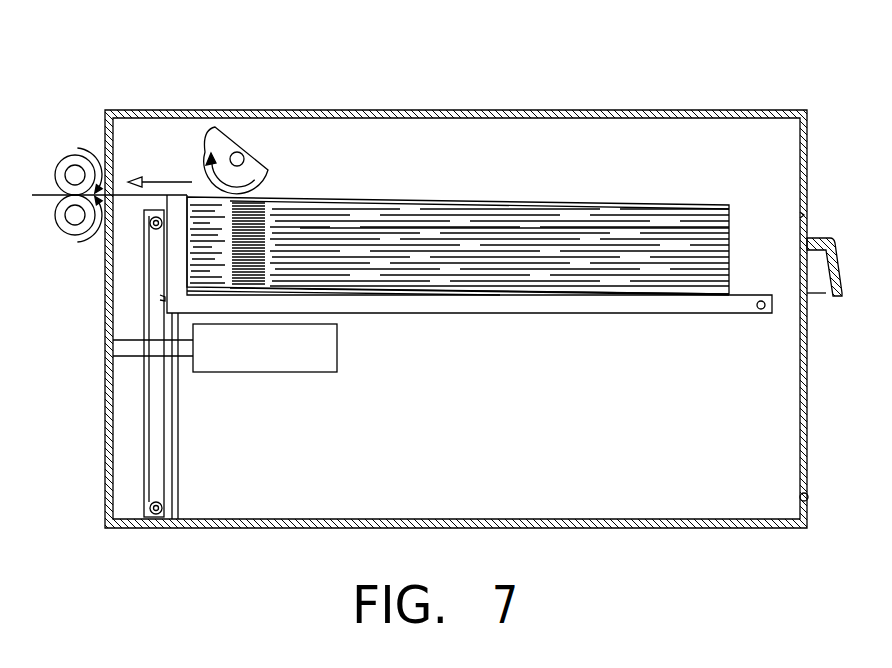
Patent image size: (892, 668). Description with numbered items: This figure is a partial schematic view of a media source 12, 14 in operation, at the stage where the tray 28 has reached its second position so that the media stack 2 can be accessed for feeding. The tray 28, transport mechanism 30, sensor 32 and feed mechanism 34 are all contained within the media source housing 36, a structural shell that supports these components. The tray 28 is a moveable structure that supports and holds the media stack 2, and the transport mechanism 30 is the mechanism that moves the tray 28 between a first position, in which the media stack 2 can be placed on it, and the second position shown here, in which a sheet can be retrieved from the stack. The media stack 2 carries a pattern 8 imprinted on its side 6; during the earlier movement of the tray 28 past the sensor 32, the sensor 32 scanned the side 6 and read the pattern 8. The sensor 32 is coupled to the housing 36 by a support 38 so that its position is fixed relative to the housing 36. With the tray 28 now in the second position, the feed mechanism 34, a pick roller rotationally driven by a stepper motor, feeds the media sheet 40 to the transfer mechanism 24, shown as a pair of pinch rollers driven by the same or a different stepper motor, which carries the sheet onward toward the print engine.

The media stack 2 is at (458, 229).
The side 6 is at (425, 232).
The pattern 8 is at (255, 232).
The media source 12 is at (480, 275).
The media source 14 is at (480, 275).
The transfer mechanism 24 is at (75, 163).
The tray 28 is at (577, 308).
The transport mechanism 30 is at (168, 430).
The sensor 32 is at (335, 352).
The feed mechanism 34 is at (228, 145).
The media source housing 36 is at (580, 110).
The support 38 is at (127, 347).
The media sheet 40 is at (48, 200).